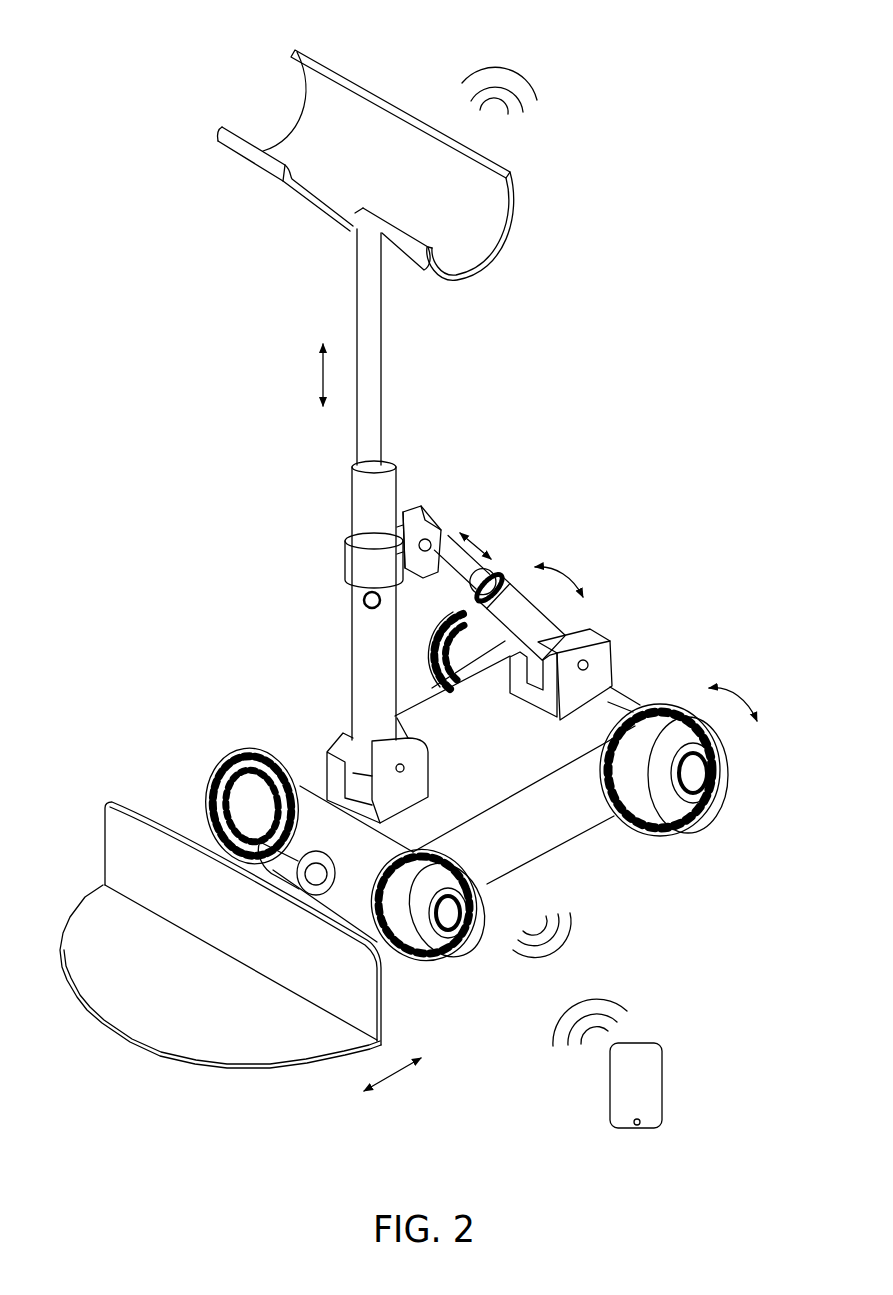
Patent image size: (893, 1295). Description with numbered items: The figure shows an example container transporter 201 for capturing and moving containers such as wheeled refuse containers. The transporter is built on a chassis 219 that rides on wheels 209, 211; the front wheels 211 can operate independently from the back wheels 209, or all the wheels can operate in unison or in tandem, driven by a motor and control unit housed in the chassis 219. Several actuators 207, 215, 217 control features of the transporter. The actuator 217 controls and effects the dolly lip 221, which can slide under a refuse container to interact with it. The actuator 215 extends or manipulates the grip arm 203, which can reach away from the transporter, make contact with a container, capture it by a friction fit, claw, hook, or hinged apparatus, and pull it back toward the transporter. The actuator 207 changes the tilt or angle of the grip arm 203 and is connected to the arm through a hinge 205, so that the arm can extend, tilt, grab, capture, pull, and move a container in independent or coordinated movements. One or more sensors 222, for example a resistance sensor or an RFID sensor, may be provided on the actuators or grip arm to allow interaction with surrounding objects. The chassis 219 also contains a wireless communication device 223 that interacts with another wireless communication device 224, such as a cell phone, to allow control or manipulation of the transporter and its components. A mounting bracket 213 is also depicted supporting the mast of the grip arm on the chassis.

The container transporter 201 is at (673, 188).
The grip arm 203 is at (392, 108).
The hinge 205 is at (422, 514).
The actuator 207 is at (503, 578).
The back wheels 209 is at (415, 676).
The front wheels 211 is at (220, 785).
The mast mounting bracket 213 is at (327, 750).
The actuator 215 is at (352, 655).
The actuator 217 is at (222, 808).
The chassis 219 is at (583, 832).
The dolly lip 221 is at (165, 1058).
The sensor 222 is at (364, 600).
The wireless communication device 223 is at (503, 845).
The wireless communication device 224 is at (662, 1085).